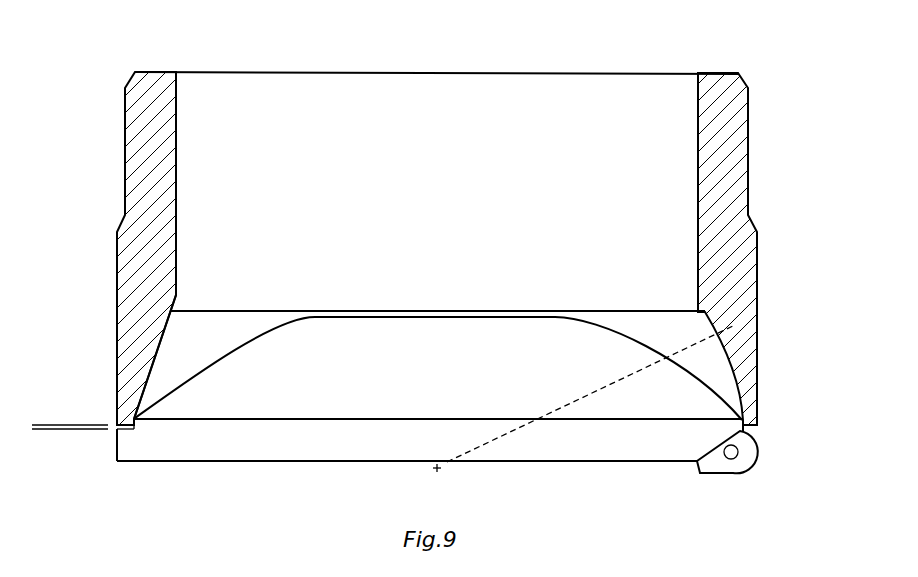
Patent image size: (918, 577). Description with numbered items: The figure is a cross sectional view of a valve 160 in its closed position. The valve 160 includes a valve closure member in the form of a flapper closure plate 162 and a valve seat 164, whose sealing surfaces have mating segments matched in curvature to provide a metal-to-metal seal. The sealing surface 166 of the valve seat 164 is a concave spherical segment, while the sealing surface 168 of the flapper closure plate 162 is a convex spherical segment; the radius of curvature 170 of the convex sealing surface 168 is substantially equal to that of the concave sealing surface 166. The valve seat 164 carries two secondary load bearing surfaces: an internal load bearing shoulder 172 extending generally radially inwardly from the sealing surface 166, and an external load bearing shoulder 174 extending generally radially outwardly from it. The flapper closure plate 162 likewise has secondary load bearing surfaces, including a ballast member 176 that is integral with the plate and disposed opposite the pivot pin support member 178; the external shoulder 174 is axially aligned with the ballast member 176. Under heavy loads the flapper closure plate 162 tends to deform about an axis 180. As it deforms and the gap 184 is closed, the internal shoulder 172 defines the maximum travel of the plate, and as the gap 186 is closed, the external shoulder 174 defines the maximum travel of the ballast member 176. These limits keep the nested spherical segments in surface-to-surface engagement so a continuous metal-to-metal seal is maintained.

The valve 160 is at (566, 50).
The flapper closure plate 162 is at (607, 448).
The valve seat 164 is at (152, 90).
The sealing surface 166 is at (155, 338).
The sealing surface 168 is at (137, 417).
The radius of curvature 170 is at (567, 405).
The internal load bearing shoulder 172 is at (177, 293).
The external load bearing shoulder 174 is at (128, 413).
The ballast member 176 is at (117, 443).
The pivot pin support member 178 is at (728, 467).
The axis 180 is at (468, 324).
The gap 184 is at (438, 383).
The gap 186 is at (45, 360).